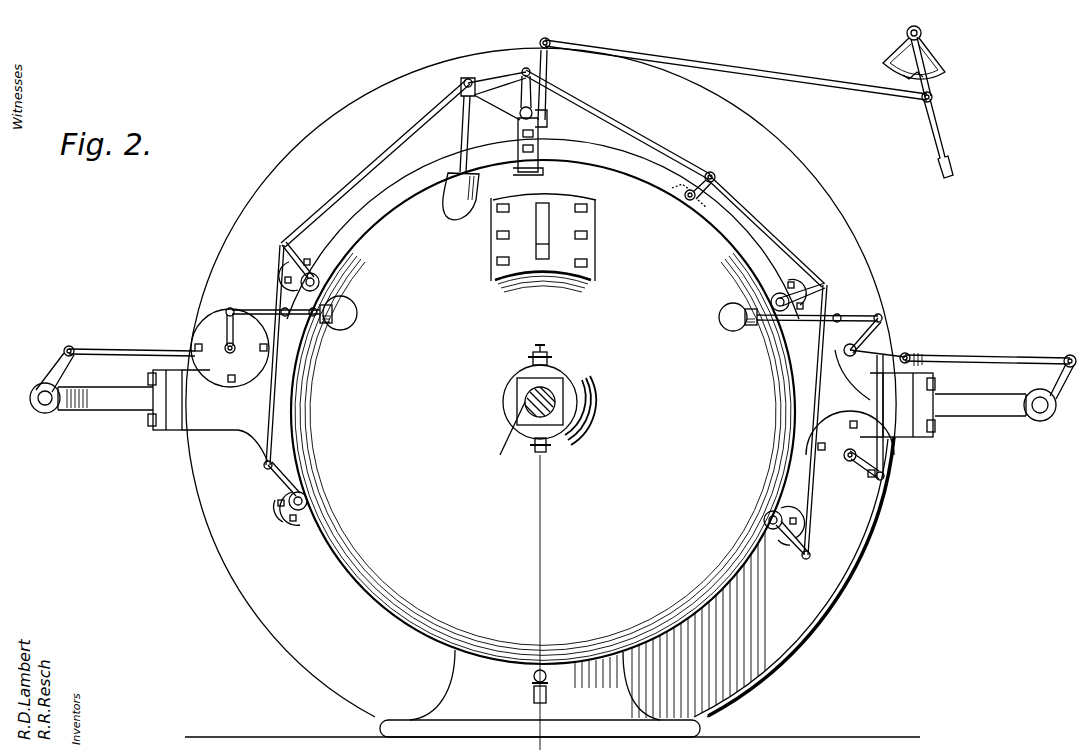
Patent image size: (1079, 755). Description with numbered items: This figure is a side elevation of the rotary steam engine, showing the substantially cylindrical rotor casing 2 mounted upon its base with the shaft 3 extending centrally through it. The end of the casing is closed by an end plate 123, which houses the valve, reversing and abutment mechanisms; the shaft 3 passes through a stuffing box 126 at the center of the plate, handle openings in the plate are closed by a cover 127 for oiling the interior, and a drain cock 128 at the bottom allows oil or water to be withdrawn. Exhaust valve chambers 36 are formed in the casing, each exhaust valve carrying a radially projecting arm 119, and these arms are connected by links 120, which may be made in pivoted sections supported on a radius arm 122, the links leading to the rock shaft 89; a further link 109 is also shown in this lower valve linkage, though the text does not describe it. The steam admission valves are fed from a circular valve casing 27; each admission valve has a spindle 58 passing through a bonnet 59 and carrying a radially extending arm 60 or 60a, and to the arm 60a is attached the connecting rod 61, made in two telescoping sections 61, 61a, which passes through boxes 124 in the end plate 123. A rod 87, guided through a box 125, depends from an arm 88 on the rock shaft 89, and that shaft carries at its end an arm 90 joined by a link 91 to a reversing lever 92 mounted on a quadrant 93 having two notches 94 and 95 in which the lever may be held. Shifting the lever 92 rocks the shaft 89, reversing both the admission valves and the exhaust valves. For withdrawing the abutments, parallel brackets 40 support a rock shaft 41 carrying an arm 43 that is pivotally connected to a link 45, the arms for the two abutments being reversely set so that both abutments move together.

The rotor casing 2 is at (538, 747).
The shaft 3 is at (560, 402).
The valve casing 27 is at (895, 470).
The exhaust valve chambers 36 is at (318, 270).
The brackets 40 is at (113, 405).
The rock shaft 41 is at (45, 405).
The arm 43 is at (57, 365).
The link 45 is at (135, 349).
The spindle 58 is at (228, 353).
The bonnet 59 is at (230, 308).
The arm 60 is at (886, 470).
The arm 60a is at (222, 330).
The connecting rod 61 is at (850, 312).
The connecting rod section 61a is at (328, 302).
The rod 87 is at (462, 110).
The arm 88 is at (500, 85).
The rock shaft 89 is at (545, 118).
The arm 90 is at (548, 72).
The link 91 is at (732, 67).
The reversing lever 92 is at (947, 136).
The quadrant 93 is at (940, 60).
The notch 94 is at (933, 88).
The notch 95 is at (890, 73).
The link 109 is at (790, 540).
The arm 119 is at (292, 490).
The links 120 is at (358, 188).
The radius arm 122 is at (714, 170).
The end plate 123 is at (671, 341).
The boxes 124 is at (332, 324).
The box 125 is at (480, 188).
The stuffing box 126 is at (505, 437).
The covers 127 is at (595, 226).
The drain cocks 128 is at (534, 678).